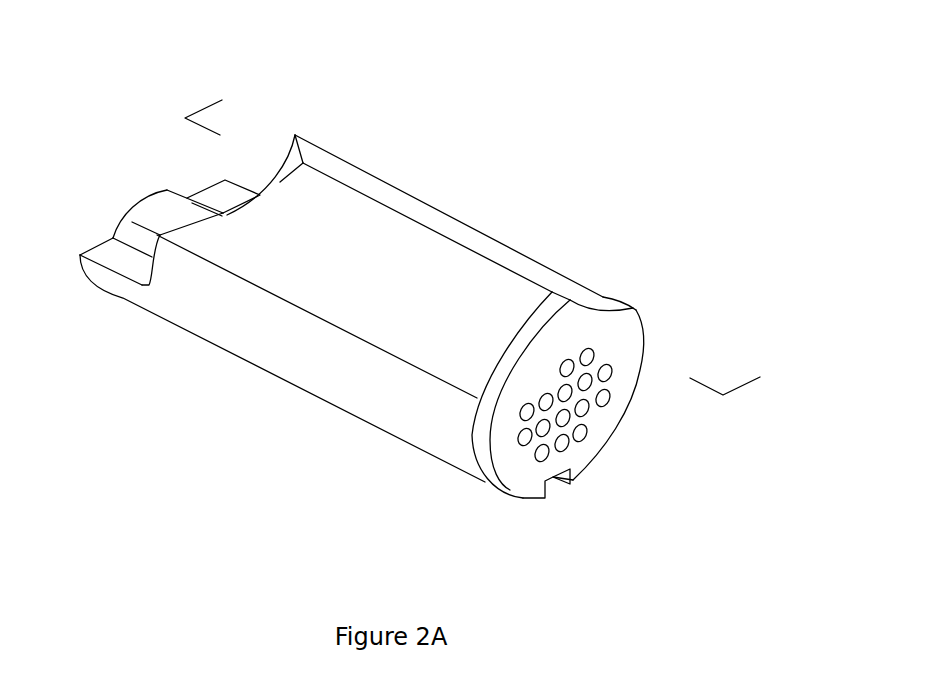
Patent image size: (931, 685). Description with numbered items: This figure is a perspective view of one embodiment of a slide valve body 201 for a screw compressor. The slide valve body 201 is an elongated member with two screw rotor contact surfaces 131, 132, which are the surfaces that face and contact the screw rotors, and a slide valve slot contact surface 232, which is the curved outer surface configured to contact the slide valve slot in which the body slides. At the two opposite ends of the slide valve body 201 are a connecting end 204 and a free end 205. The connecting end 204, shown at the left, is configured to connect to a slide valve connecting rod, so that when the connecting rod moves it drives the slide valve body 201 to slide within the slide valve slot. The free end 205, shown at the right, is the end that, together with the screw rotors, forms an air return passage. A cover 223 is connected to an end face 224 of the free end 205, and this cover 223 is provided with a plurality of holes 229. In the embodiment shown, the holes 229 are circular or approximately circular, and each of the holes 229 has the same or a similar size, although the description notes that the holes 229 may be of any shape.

The slide valve body 201 is at (514, 212).
The screw rotor contact surface 131 is at (523, 262).
The screw rotor contact surface 132 is at (335, 275).
The connecting end 204 is at (171, 187).
The free end 205 is at (613, 300).
The cover 223 is at (530, 500).
The end face 224 is at (487, 490).
The holes 229 is at (584, 433).
The slide valve slot contact surface 232 is at (420, 398).